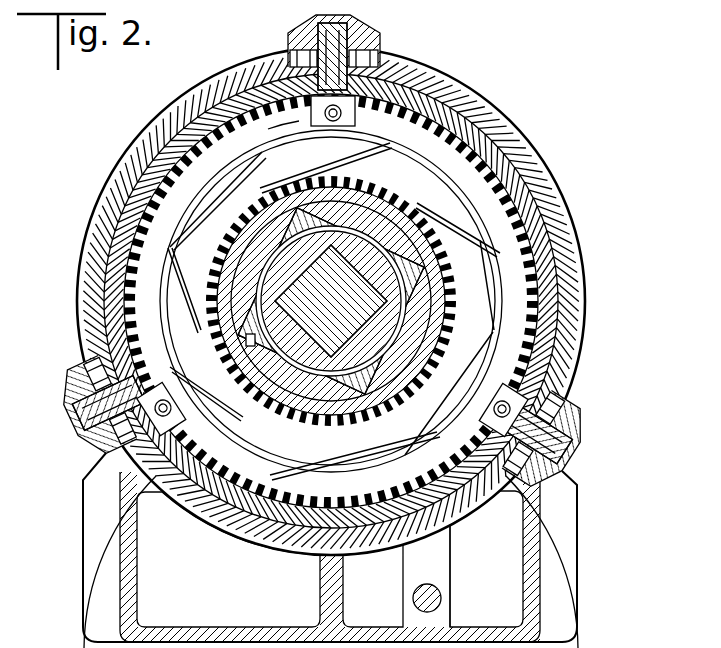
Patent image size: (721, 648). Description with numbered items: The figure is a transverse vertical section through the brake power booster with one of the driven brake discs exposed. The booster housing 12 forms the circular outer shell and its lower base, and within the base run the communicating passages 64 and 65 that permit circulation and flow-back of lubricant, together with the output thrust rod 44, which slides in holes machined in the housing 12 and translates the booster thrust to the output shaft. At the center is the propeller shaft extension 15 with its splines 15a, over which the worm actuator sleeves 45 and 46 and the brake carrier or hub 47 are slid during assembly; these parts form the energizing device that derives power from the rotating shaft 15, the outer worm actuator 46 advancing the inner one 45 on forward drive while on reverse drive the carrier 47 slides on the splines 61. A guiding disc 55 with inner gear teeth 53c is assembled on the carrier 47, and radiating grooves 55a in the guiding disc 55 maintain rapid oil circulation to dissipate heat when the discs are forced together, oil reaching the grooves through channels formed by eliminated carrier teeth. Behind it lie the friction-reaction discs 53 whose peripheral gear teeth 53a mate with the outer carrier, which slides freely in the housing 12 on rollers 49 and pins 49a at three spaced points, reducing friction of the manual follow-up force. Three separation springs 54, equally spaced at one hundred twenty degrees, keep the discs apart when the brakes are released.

The booster housing 12 is at (160, 137).
The propeller shaft extension 15 is at (348, 296).
The splines 15a is at (358, 346).
The output thrust rod 44 is at (414, 598).
The inner worm actuator sleeve 45 is at (388, 333).
The outer worm actuator sleeve 46 is at (250, 346).
The brake carrier or hub 47 is at (228, 258).
The rollers 49 is at (570, 454).
The pins 49a is at (586, 425).
The friction-reaction discs 53 is at (291, 128).
The gear teeth 53a is at (465, 96).
The inner gear teeth 53c is at (280, 126).
The separation springs 54 is at (491, 409).
The guiding discs 55 is at (462, 188).
The radiating grooves 55a is at (303, 464).
The splines 61 is at (328, 212).
The communicating passage 64 is at (502, 576).
The communicating passage 65 is at (230, 589).